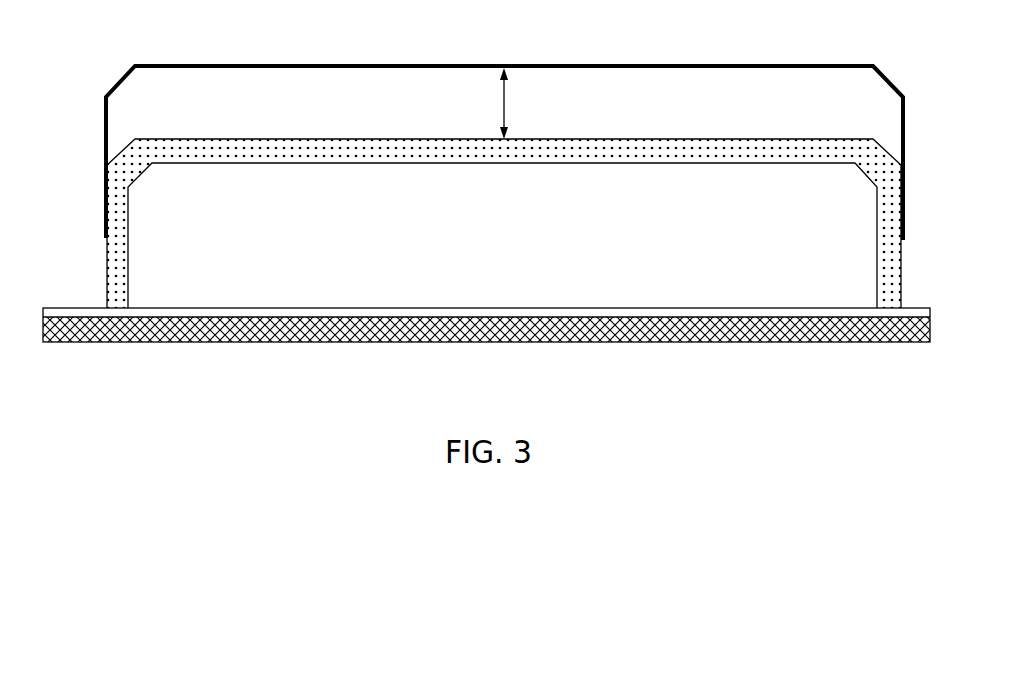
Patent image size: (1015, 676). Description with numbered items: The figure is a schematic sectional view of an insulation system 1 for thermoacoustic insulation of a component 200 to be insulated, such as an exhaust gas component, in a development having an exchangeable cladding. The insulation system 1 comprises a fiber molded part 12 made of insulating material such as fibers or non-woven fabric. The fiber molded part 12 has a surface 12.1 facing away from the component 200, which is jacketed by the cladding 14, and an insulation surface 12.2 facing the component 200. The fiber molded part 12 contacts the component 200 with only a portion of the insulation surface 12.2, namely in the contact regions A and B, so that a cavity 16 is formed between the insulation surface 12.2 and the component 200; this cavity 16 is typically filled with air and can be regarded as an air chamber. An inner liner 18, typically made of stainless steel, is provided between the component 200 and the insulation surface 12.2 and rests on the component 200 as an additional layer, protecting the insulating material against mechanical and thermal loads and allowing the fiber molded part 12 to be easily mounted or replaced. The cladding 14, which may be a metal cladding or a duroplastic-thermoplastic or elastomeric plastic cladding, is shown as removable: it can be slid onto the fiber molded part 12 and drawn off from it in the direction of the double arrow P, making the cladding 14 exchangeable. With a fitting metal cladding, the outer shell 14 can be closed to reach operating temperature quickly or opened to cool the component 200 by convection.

The insulation system 1 is at (924, 103).
The fiber molded part 12 is at (400, 148).
The surface facing away from component 12.1 is at (585, 138).
The insulation surface 12.2 is at (428, 165).
The cladding 14 is at (634, 58).
The cavity 16 is at (862, 227).
The inner liner 18 is at (929, 314).
The component to be insulated 200 is at (800, 344).
The double arrow P is at (511, 103).
The contact region A is at (916, 300).
The contact region B is at (74, 298).